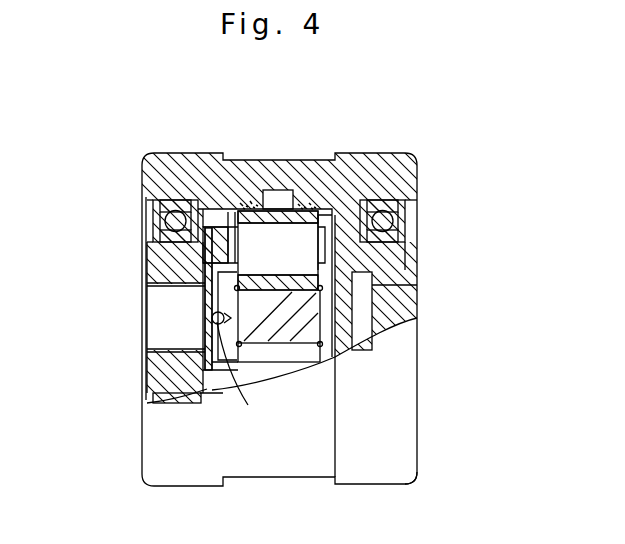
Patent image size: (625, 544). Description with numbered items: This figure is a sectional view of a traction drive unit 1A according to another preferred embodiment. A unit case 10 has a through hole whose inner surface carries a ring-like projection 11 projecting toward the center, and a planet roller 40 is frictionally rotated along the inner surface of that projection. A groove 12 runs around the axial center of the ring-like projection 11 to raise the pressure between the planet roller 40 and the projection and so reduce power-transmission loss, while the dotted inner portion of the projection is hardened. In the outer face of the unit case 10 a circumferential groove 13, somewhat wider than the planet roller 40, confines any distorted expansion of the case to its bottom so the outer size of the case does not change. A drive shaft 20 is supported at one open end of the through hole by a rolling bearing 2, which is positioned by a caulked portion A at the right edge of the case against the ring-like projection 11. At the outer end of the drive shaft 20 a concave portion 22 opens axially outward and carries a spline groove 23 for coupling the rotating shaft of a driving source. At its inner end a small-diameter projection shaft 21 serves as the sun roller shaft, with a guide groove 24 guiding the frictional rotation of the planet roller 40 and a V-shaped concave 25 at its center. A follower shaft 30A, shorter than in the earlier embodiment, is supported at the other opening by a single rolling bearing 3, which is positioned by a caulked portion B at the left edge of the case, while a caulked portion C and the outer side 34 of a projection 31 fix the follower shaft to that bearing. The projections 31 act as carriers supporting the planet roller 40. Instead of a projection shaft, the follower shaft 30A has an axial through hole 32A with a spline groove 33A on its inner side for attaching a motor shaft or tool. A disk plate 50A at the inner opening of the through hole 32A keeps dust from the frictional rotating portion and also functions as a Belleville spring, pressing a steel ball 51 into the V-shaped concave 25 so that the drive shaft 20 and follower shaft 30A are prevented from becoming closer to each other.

The traction drive unit 1A is at (424, 470).
The unit case 10 is at (393, 158).
The ring-like projection 11 is at (216, 207).
The groove 12 is at (285, 192).
The circumferential groove 13 is at (264, 200).
The outer side of the projection 34 is at (197, 205).
The rolling bearing 2 is at (409, 220).
The rolling bearing 3 is at (150, 221).
The caulked portion A is at (414, 204).
The caulked portion B is at (142, 207).
The caulked portion C is at (142, 232).
The drive shaft 20 is at (395, 320).
The projection shaft 21 is at (293, 366).
The concave portion 22 is at (407, 298).
The spline groove 23 is at (372, 282).
The guide groove 24 is at (254, 346).
The V-shaped concave 25 is at (228, 380).
The follower shaft 30A is at (158, 383).
The projection 31 is at (215, 252).
The through hole 32A is at (152, 317).
The spline groove 33A is at (152, 339).
The planet roller 40 is at (292, 341).
The disk plate 50A is at (210, 290).
The ball 51 is at (212, 323).